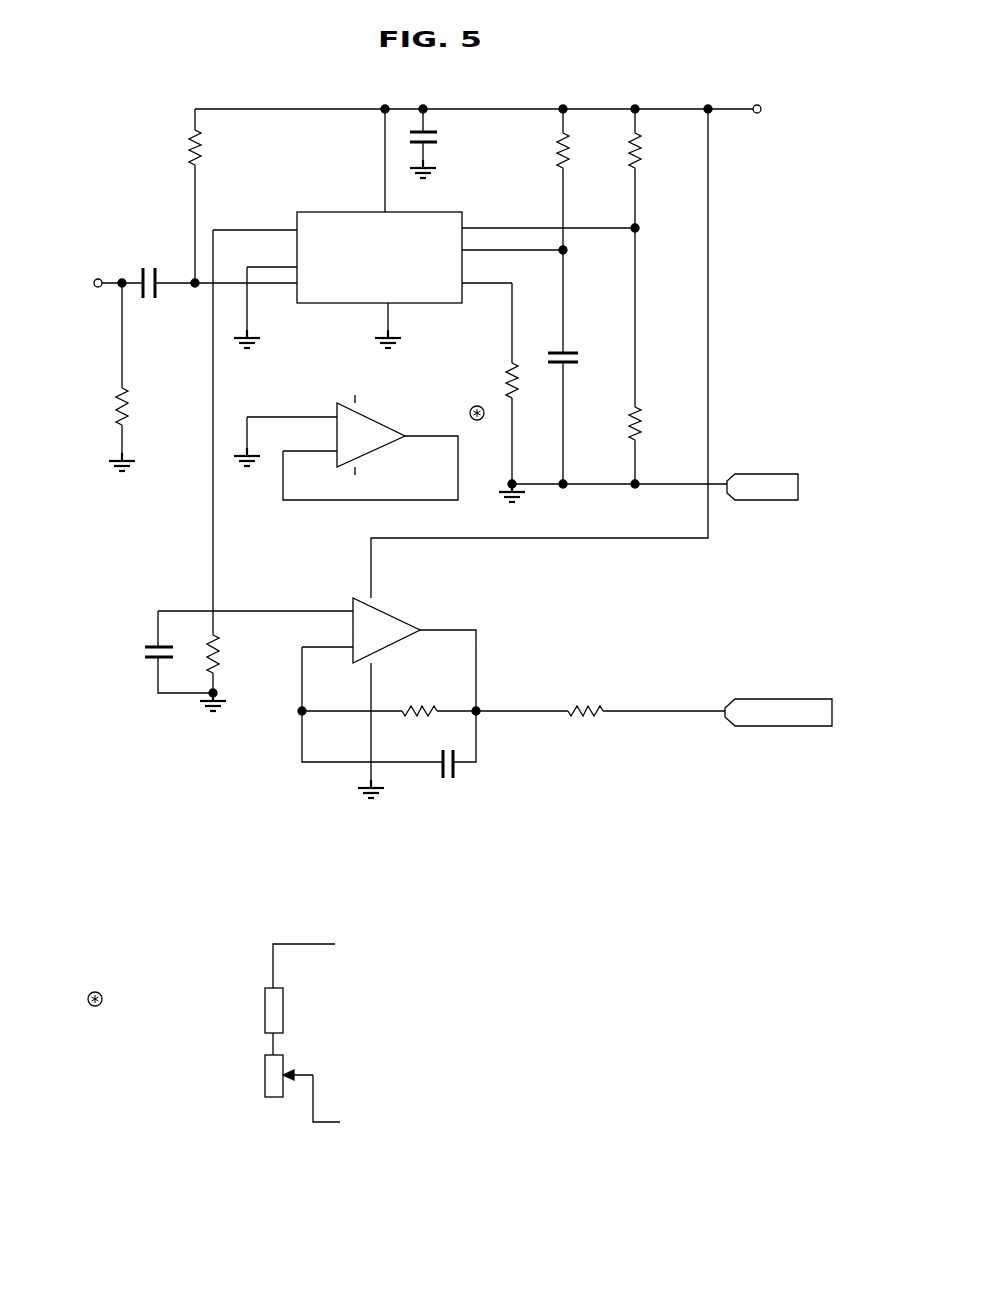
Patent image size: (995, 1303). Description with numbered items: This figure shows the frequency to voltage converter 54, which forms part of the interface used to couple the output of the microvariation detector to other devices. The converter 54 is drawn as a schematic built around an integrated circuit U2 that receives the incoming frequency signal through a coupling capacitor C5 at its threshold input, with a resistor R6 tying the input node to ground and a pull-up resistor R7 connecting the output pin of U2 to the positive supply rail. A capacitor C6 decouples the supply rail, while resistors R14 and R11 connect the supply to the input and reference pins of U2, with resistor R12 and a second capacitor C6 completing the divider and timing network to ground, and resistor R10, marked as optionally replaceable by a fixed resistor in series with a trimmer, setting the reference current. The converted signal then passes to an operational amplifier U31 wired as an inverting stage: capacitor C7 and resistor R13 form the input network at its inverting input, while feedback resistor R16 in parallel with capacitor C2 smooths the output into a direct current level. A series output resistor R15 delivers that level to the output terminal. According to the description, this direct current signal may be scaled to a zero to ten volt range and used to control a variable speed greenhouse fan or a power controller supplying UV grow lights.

The frequency to voltage converter 54 is at (578, 946).
The resistor R7 10K R7 is at (222, 196).
The capacitor C5 470PF C5 is at (159, 280).
The resistor R6 1K R6 is at (139, 377).
The LM331 frequency-to-voltage converter U2 is at (381, 257).
The capacitor C6 is at (520, 249).
The resistor R14 is at (538, 296).
The resistor R11 10K R11 is at (652, 258).
The resistor R12 6.8K R12 is at (661, 443).
The resistor R10 14K R10 is at (489, 389).
The LM986 operational amplifier U31 is at (367, 605).
The resistor R16 100K R16 is at (430, 687).
The resistor R15 100K R15 is at (587, 685).
The capacitor C2 0.1uF C2 is at (480, 788).
The capacitor C7 1uF C7 is at (163, 644).
The resistor R13 100K R13 is at (240, 461).